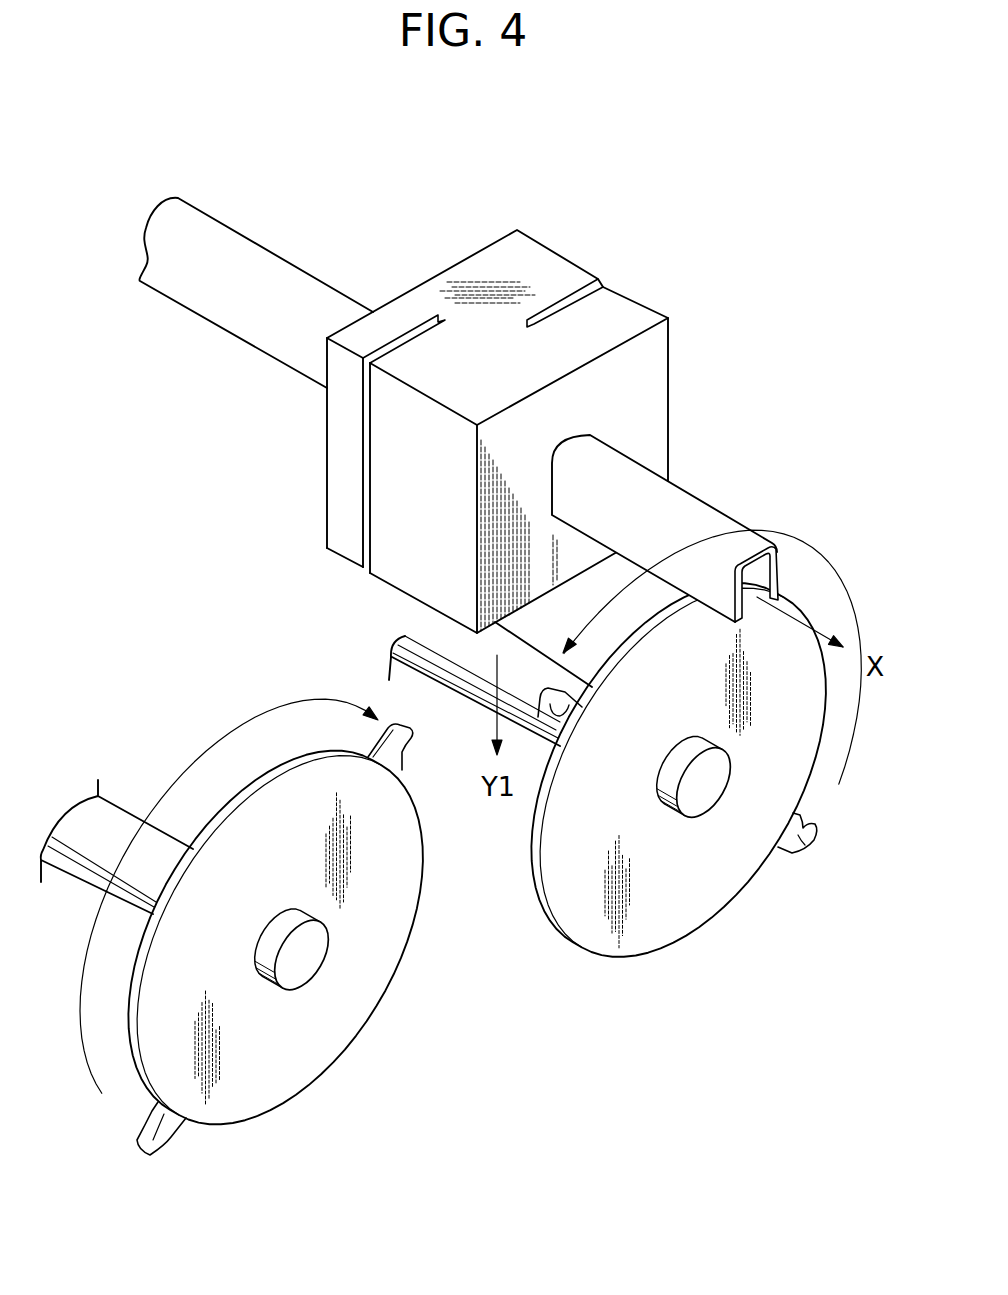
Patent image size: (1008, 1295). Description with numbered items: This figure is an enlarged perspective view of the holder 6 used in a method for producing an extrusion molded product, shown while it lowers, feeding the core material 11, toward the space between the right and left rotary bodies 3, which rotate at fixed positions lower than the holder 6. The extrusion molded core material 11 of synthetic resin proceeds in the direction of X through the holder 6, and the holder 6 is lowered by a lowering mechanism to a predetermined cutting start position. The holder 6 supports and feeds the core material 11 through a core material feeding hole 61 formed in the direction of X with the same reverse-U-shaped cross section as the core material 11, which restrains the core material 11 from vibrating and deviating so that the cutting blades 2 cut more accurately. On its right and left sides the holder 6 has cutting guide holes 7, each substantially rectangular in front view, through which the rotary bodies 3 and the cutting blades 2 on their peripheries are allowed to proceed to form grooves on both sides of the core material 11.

The cutting blade 2 is at (800, 840).
The rotary body 3 is at (670, 913).
The holder 6 is at (612, 316).
The cutting guide hole 7 is at (410, 332).
The core material 11 is at (249, 256).
The core material feeding hole 61 is at (573, 452).